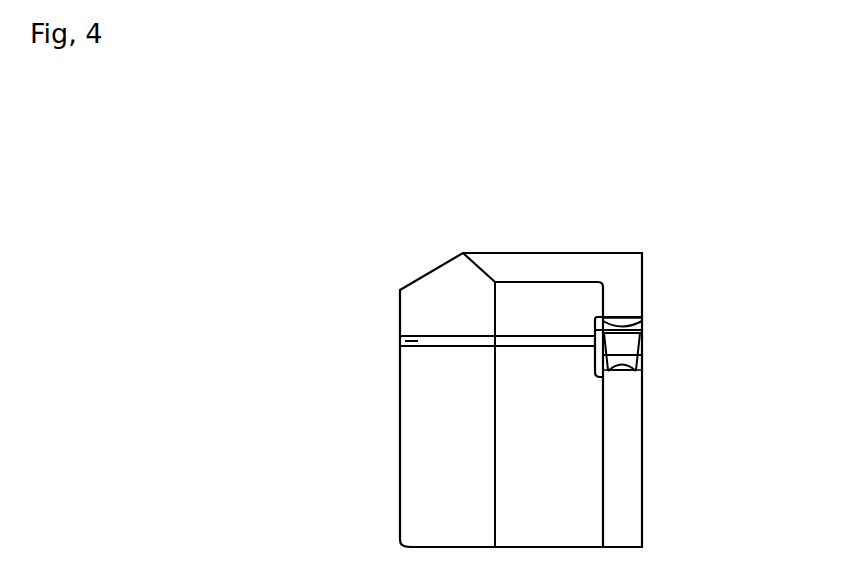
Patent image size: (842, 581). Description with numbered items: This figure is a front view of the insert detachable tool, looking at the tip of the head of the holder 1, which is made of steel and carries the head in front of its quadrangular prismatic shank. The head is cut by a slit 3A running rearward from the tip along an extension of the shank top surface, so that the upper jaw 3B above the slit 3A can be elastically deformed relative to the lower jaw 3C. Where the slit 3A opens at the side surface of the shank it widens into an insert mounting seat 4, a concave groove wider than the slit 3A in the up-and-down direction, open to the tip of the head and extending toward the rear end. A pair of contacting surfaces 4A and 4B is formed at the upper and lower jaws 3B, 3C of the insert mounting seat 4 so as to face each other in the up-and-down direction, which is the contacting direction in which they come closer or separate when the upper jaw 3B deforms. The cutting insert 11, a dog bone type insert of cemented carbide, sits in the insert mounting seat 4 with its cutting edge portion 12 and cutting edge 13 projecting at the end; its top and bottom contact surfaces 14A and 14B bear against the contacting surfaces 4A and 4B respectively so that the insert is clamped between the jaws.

The holder 1 is at (411, 241).
The slit 3A is at (400, 341).
The upper jaw 3B is at (632, 277).
The lower jaw 3C is at (623, 485).
The insert mounting seat 4 is at (573, 375).
The contacting surface 4A is at (644, 328).
The contacting surface 4B is at (637, 362).
The cutting insert 11 is at (660, 352).
The cutting edge portion 12 is at (586, 315).
The cutting edge 13 is at (612, 313).
The contact surface 14A is at (636, 322).
The contact surface 14B is at (630, 367).